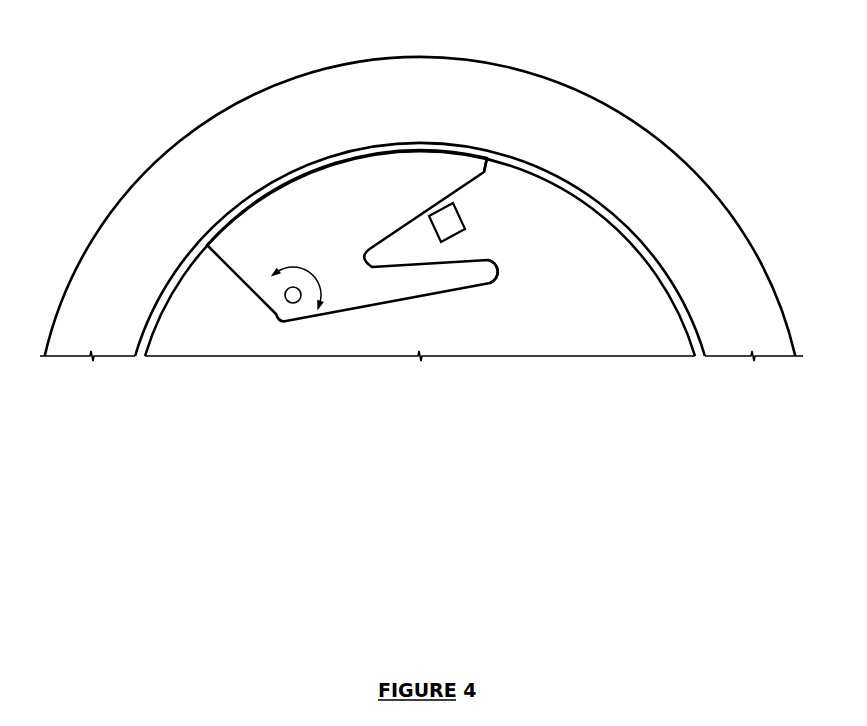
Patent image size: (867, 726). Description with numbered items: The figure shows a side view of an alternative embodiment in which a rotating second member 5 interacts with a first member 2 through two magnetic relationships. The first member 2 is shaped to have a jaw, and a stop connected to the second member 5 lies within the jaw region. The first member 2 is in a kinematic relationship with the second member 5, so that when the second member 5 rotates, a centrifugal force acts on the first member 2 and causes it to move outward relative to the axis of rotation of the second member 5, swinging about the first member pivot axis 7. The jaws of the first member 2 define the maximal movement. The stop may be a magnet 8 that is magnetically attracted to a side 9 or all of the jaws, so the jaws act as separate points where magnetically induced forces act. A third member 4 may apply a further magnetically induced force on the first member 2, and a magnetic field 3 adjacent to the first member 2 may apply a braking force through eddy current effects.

The first member 2 is at (457, 160).
The magnetic field 3 is at (699, 347).
The third member 4 is at (190, 162).
The second member 5 is at (189, 319).
The first member pivot axis 7 is at (287, 303).
The magnet 8 is at (430, 215).
The side of the first member jaws 9 is at (486, 257).